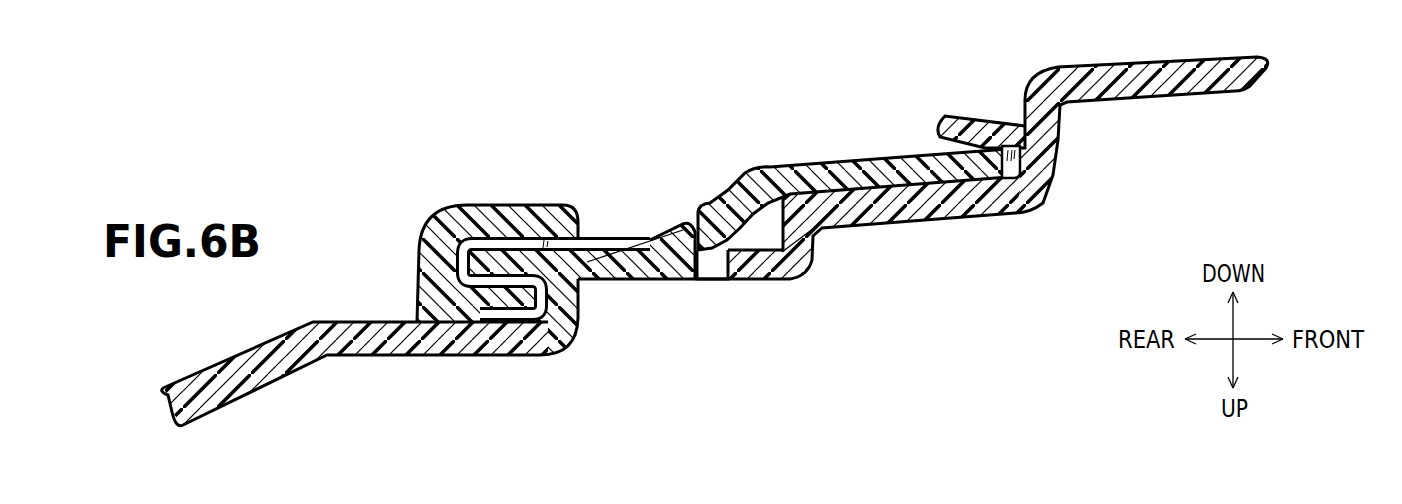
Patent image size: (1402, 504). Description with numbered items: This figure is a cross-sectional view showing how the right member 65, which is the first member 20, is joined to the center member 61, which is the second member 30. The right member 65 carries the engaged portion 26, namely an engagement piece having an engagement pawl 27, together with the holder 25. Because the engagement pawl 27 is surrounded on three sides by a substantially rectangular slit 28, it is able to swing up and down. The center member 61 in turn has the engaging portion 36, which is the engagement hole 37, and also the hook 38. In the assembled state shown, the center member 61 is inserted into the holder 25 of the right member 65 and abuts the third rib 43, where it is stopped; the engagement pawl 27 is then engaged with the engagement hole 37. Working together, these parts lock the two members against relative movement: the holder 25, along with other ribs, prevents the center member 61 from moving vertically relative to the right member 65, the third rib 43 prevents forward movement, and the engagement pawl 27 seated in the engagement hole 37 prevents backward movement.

The first member 20 is at (982, 179).
The holder 25 is at (970, 115).
The engaged portion 26 is at (675, 243).
The engagement pawl 27 is at (636, 217).
The slit 28 is at (714, 270).
The second member 30 is at (850, 162).
The engaging portion 36 is at (572, 216).
The engagement hole 37 is at (556, 234).
The hook 38 is at (483, 316).
The third rib 43 is at (1020, 173).
The center member 61 is at (813, 157).
The right member 65 is at (878, 232).